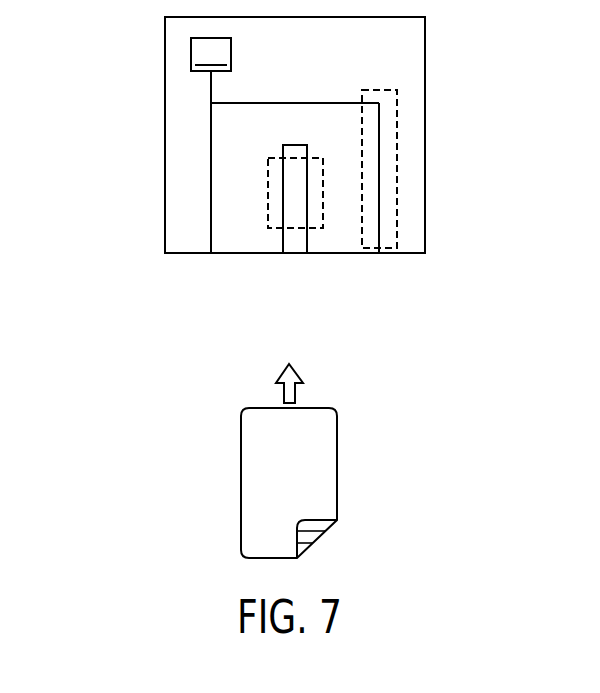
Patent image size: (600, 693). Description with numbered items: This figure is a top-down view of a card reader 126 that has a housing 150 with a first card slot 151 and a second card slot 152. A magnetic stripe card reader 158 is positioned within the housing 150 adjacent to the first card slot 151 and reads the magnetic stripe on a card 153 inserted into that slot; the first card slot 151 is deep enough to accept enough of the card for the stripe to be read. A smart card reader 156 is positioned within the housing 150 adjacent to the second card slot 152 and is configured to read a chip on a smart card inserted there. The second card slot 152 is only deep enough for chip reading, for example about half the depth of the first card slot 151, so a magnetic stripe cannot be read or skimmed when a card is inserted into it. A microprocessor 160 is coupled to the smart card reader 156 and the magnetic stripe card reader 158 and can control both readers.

The card reader 126 is at (128, 172).
The housing 150 is at (425, 82).
The first card slot 151 is at (222, 258).
The second card slot 152 is at (302, 261).
The card 153 is at (337, 457).
The smart card reader 156 is at (268, 228).
The magnetic stripe card reader 158 is at (397, 210).
The microprocessor 160 is at (211, 145).